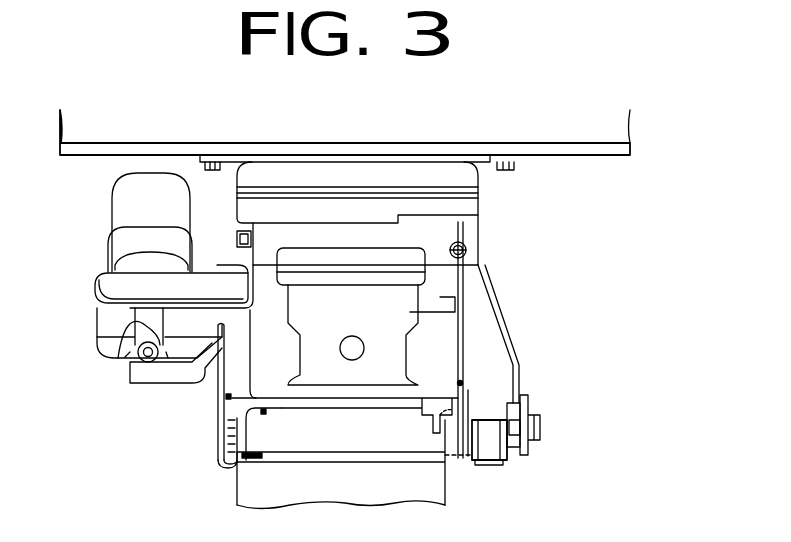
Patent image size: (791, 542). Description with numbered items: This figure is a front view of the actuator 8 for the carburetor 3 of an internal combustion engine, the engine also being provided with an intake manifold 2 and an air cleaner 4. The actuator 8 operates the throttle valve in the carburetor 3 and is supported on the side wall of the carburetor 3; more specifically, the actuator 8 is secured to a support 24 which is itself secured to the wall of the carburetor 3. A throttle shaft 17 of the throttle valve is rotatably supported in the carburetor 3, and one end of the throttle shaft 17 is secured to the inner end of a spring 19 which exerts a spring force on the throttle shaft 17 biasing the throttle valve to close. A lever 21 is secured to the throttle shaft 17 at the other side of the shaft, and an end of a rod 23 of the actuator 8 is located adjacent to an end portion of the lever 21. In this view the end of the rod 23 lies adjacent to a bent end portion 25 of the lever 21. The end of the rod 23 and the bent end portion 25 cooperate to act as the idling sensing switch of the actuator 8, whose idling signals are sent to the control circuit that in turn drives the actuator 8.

The intake manifold 2 is at (445, 498).
The carburetor 3 is at (460, 228).
The air cleaner 4 is at (595, 163).
The actuator 8 is at (123, 217).
The throttle shaft 17 is at (226, 445).
The spring 19 is at (487, 462).
The lever 21 is at (222, 410).
The rod 23 is at (132, 343).
The support 24 is at (122, 290).
The bent end portion 25 is at (162, 378).